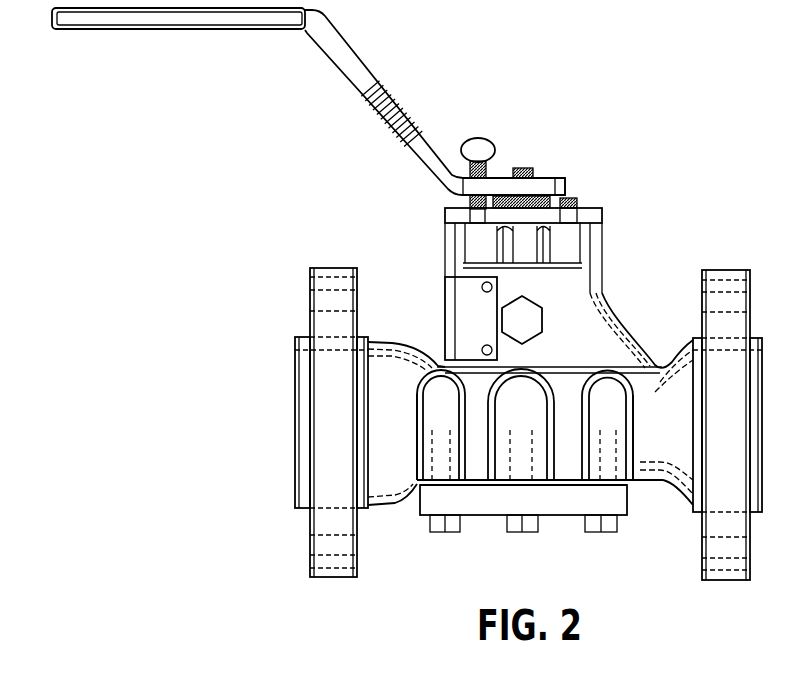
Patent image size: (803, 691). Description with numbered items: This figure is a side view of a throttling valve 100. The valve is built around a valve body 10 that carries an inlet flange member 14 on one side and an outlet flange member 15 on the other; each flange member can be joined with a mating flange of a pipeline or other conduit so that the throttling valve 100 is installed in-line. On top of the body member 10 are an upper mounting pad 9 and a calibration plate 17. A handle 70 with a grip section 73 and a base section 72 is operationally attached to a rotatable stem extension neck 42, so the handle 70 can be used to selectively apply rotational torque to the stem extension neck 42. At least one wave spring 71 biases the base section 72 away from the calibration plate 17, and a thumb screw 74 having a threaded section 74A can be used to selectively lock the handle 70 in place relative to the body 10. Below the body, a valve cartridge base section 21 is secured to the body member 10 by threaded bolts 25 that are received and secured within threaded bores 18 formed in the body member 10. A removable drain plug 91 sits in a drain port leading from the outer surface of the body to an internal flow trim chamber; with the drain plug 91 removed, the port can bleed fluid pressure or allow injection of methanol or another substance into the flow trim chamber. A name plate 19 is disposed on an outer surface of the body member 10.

The throttling valve 100 is at (195, 434).
The grip section 73 is at (92, 30).
The handle 70 is at (373, 107).
The thumb screw 74 is at (480, 138).
The base section 72 is at (500, 182).
The stem extension neck 42 is at (532, 168).
The threaded section 74A is at (470, 199).
The calibration plate 17 is at (598, 208).
The wave spring 71 is at (578, 198).
The upper mounting pad 9 is at (602, 217).
The valve body 10 is at (602, 293).
The name plate 19 is at (447, 337).
The drain plug 91 is at (523, 325).
The threaded bores 18 is at (432, 417).
The valve cartridge base section 21 is at (473, 507).
The threaded bolts 25 is at (447, 533).
The outlet flange member 15 is at (327, 575).
The inlet flange member 14 is at (722, 572).